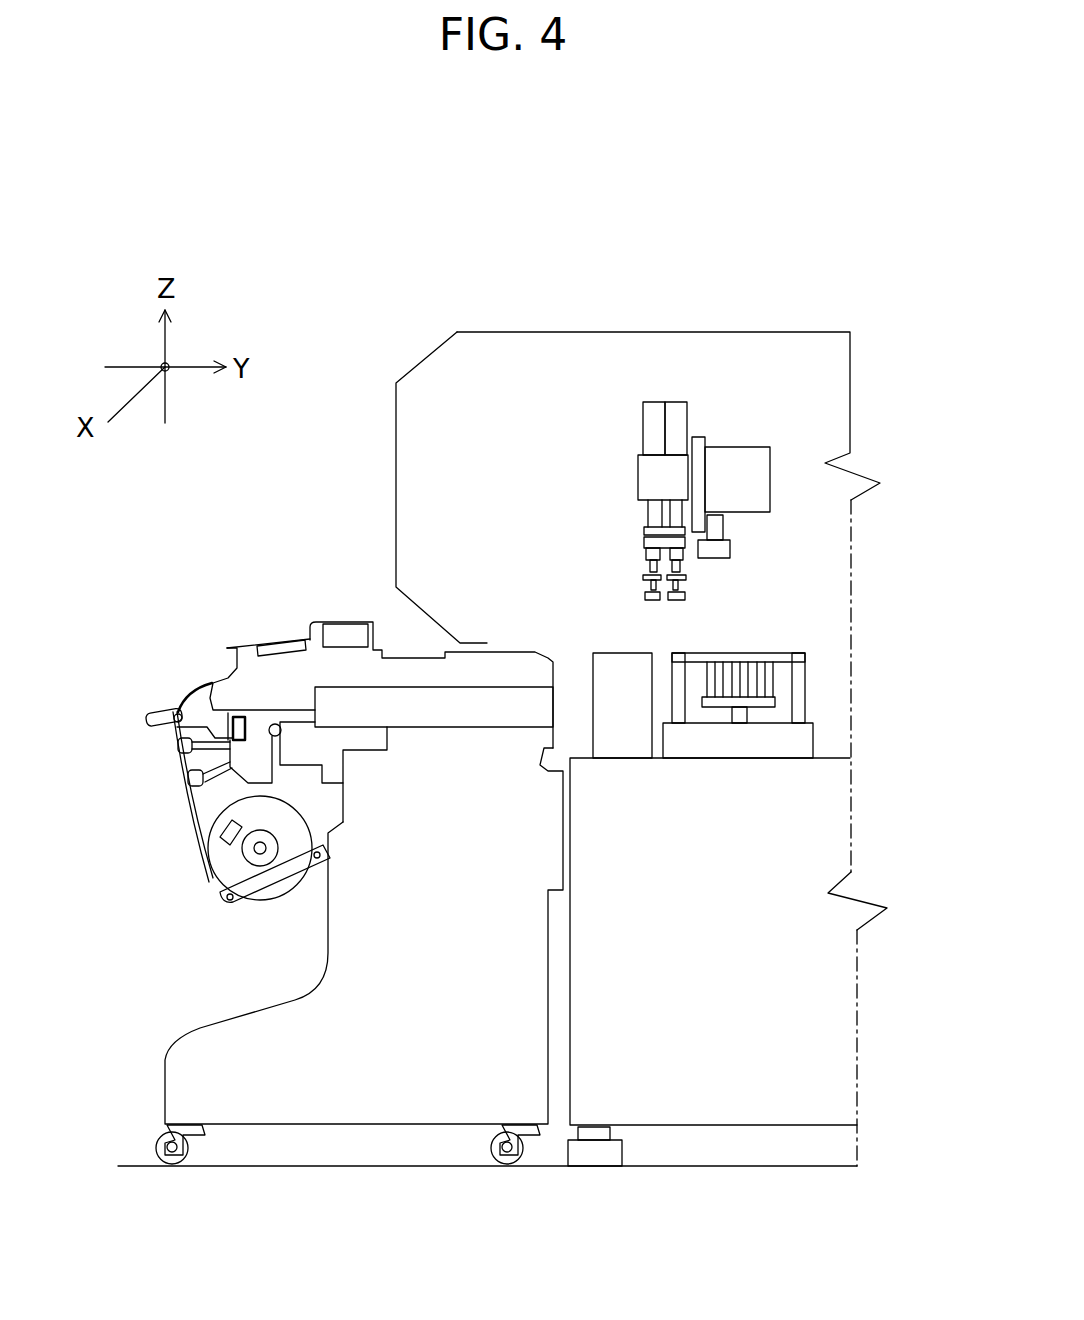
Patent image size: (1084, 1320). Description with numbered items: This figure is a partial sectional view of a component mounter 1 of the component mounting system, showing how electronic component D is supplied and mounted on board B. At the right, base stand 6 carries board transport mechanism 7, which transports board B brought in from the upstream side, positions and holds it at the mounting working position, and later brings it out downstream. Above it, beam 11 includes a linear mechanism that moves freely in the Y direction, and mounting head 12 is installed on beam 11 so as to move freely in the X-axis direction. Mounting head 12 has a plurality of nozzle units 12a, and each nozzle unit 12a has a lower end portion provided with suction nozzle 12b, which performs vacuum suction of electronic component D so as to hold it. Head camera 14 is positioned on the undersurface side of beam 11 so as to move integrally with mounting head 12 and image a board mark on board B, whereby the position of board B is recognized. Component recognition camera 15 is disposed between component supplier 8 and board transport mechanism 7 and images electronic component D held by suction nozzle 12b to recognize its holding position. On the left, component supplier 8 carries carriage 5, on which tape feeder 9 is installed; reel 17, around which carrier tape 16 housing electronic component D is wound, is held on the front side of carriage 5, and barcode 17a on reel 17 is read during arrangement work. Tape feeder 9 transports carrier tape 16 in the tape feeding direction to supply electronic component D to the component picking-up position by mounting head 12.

The component mounting machine 1 is at (512, 213).
The carriage 5 is at (197, 1065).
The base stand 6 is at (812, 812).
The board transport mechanism 7 is at (792, 684).
The component supplier 8 is at (308, 720).
The tape feeder 9 is at (282, 677).
The beam 11 is at (743, 463).
The mounting head 12 is at (780, 437).
The nozzle unit 12a is at (678, 415).
The suction nozzle 12b is at (680, 587).
The head camera 14 is at (715, 550).
The component recognition camera 15 is at (622, 735).
The carrier tape 16 is at (185, 808).
The reel 17 is at (196, 865).
The barcode 17a is at (222, 838).
The board B is at (727, 657).
The electronic component D is at (685, 597).